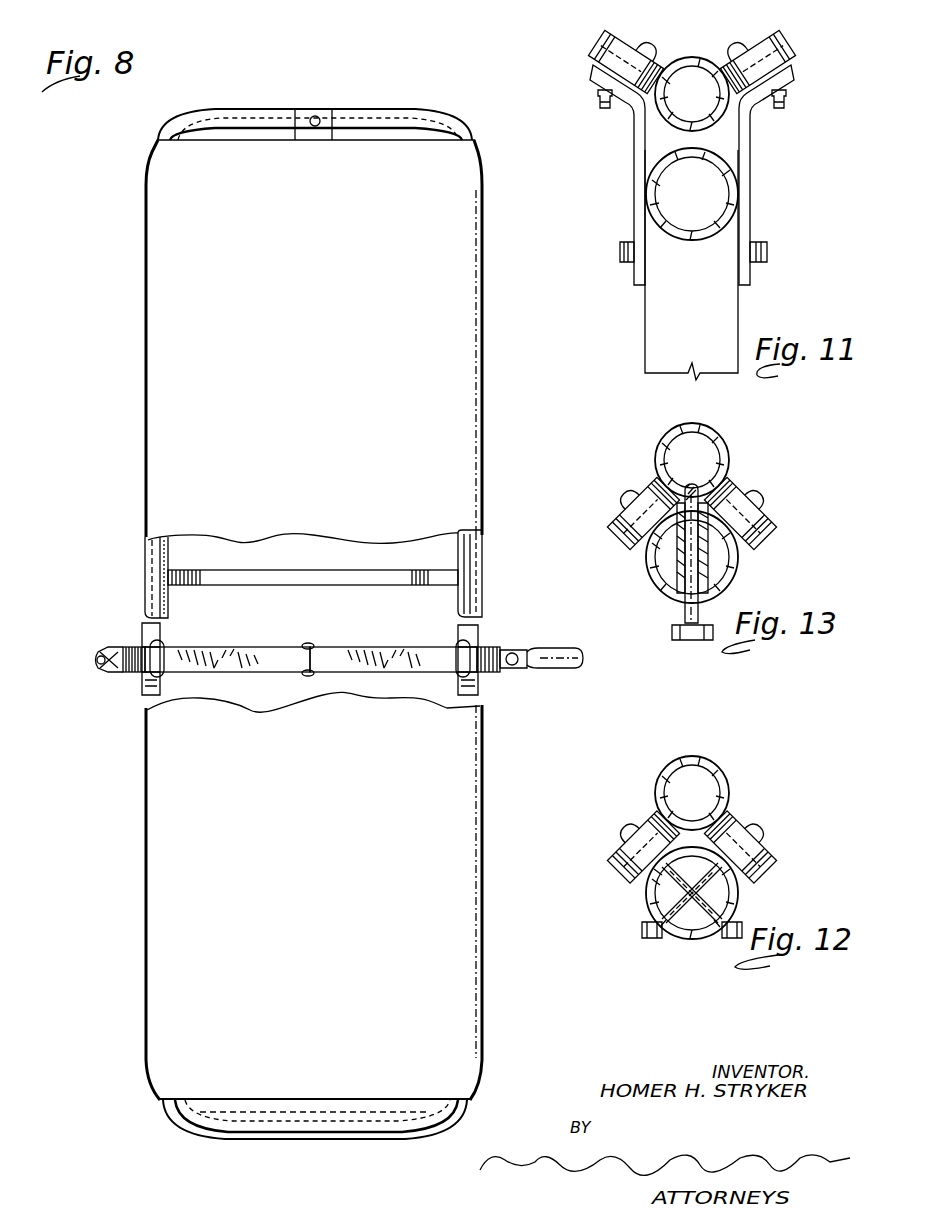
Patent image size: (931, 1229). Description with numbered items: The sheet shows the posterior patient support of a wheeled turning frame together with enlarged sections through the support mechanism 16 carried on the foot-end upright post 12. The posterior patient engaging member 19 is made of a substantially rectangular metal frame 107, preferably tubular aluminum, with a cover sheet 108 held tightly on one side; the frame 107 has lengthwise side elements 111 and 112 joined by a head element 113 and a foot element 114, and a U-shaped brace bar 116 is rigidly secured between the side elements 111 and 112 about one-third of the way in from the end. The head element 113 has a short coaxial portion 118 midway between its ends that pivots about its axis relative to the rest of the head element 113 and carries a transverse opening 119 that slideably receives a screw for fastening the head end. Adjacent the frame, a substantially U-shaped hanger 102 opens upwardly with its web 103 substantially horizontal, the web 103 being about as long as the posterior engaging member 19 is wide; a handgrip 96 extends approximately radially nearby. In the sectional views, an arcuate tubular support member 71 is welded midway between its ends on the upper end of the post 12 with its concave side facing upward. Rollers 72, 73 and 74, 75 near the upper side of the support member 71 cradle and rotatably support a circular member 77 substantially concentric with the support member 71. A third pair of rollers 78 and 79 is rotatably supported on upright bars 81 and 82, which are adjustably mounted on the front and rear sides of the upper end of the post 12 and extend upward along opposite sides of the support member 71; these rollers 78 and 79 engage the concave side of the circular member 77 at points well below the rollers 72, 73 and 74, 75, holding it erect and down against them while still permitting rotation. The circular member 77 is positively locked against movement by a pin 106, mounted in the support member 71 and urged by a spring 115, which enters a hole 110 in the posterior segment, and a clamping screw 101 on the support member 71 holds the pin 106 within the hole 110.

In FIG. 11, the upright post 12 is at (646, 325).
In FIG. 8, the support mechanism 16 is at (114, 643).
In FIG. 8, the posterior patient engaging member 19 is at (486, 1001).
In FIG. 11, the arcuate tubular support member 71 is at (682, 240).
In FIG. 13, the arcuate tubular support member 71 is at (662, 590).
In FIG. 12, the arcuate tubular support member 71 is at (684, 941).
In FIG. 13, the roller 72 is at (615, 535).
In FIG. 13, the roller 73 is at (775, 524).
In FIG. 12, the roller 74 is at (614, 871).
In FIG. 12, the roller 75 is at (765, 861).
In FIG. 11, the circular member 77 is at (700, 58).
In FIG. 13, the circular member 77 is at (715, 446).
In FIG. 12, the circular member 77 is at (722, 777).
In FIG. 11, the roller 78 is at (600, 46).
In FIG. 11, the roller 79 is at (786, 43).
In FIG. 11, the upright bar 81 is at (632, 134).
In FIG. 11, the upright bar 82 is at (752, 157).
In FIG. 8, the handgrip 96 is at (561, 666).
In FIG. 13, the clamping screw 101 is at (676, 628).
In FIG. 8, the U-shaped hanger 102 is at (360, 645).
In FIG. 8, the web 103 is at (272, 650).
In FIG. 13, the pin 106 is at (699, 486).
In FIG. 8, the metal frame 107 is at (482, 548).
In FIG. 8, the cover sheet 108 is at (315, 905).
In FIG. 13, the hole 110 is at (703, 481).
In FIG. 8, the side element 111 is at (147, 545).
In FIG. 8, the side element 112 is at (470, 578).
In FIG. 8, the head element 113 is at (365, 118).
In FIG. 8, the foot element 114 is at (332, 1125).
In FIG. 13, the spring 115 is at (683, 548).
In FIG. 8, the brace bar 116 is at (245, 577).
In FIG. 8, the coaxial portion 118 is at (322, 120).
In FIG. 8, the transverse opening 119 is at (313, 116).